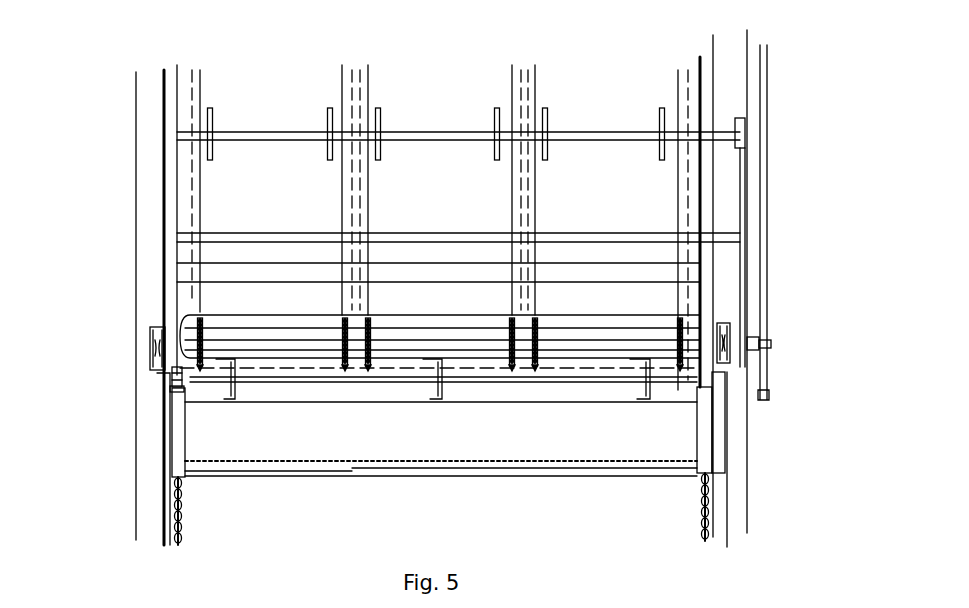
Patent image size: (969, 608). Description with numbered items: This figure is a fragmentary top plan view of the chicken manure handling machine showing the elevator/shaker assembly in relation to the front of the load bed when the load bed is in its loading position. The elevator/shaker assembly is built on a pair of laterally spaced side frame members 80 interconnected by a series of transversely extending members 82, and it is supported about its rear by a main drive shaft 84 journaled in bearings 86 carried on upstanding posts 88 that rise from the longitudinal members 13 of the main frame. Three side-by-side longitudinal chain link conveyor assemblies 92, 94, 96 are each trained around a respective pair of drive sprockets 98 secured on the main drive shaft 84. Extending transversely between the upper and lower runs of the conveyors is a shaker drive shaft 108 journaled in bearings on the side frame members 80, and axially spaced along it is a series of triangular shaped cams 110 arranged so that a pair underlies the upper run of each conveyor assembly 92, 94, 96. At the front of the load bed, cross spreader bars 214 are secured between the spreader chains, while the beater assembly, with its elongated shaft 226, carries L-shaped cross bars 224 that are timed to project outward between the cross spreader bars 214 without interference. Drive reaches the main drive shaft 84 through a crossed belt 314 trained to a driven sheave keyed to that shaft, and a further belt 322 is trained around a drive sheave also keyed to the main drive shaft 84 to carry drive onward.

The longitudinal members 13 is at (150, 100).
The side frame members 80 is at (172, 150).
The transversely extending members 82 is at (232, 240).
The main drive shaft 84 is at (222, 345).
The bearing block 86 is at (150, 335).
The upstanding posts 88 is at (155, 360).
The chain link conveyor assembly 92 is at (256, 78).
The chain link conveyor assembly 94 is at (413, 76).
The chain link conveyor assembly 96 is at (581, 74).
The drive sprockets 98 is at (680, 318).
The shaker drive shaft 108 is at (258, 137).
The triangular shaped cams 110 is at (215, 118).
The cross spreader bar 214 is at (278, 462).
The L-shaped cross bars 224 is at (572, 357).
The elongated shaft 226 is at (290, 380).
The belt 314 is at (762, 238).
The belt 322 is at (742, 205).